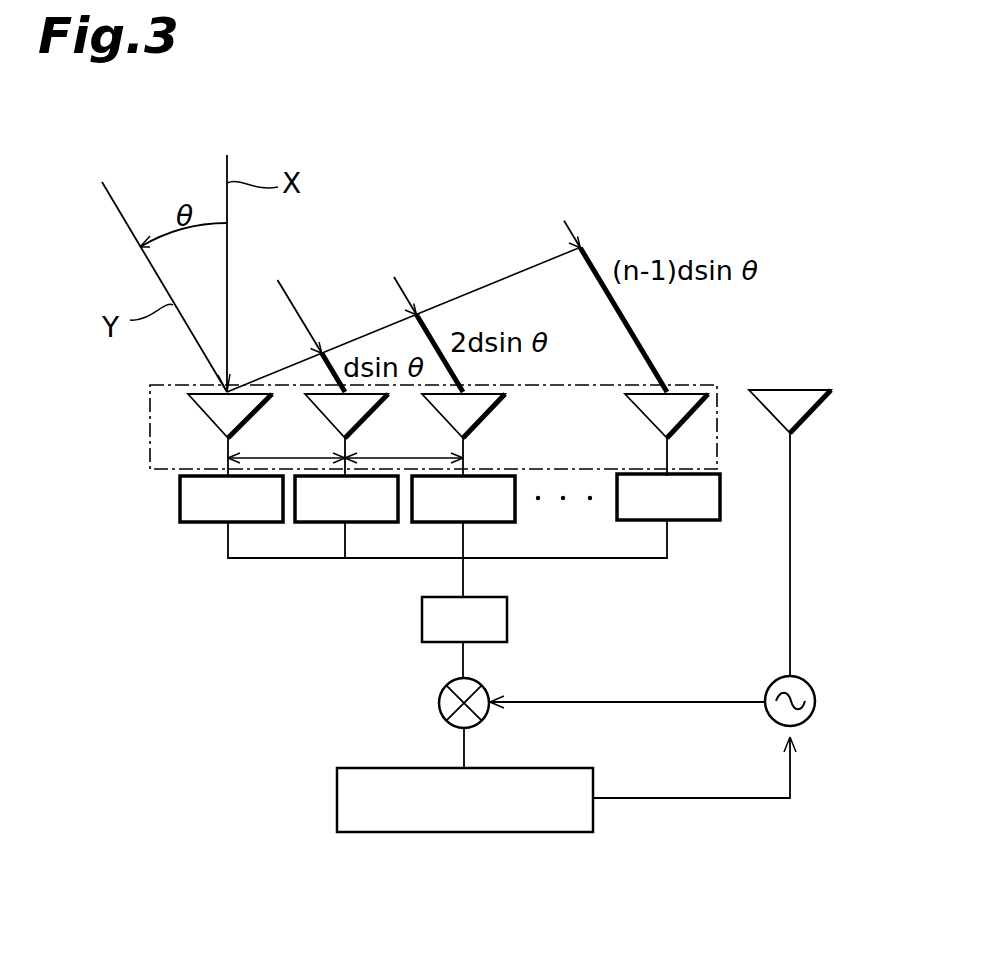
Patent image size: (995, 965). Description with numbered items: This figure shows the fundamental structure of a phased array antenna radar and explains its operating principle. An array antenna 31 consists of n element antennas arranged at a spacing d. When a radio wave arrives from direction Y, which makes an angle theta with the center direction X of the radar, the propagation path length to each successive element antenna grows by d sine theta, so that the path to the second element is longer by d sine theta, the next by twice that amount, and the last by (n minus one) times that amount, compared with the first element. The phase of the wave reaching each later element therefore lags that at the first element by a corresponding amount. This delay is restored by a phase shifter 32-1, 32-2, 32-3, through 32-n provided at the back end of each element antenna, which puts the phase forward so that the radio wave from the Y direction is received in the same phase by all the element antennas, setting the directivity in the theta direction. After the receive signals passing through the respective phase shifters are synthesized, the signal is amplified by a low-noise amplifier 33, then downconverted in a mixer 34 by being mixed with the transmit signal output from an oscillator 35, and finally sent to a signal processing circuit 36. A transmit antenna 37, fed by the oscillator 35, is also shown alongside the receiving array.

The array antenna 31 is at (683, 383).
The phase shifter 32-1 is at (243, 523).
The phase shifter 32-2 is at (360, 523).
The phase shifter 32-3 is at (488, 522).
The phase shifter 32-n is at (690, 520).
The low-noise amplifier 33 is at (507, 613).
The mixer 34 is at (487, 687).
The oscillator 35 is at (810, 679).
The signal processing circuit 36 is at (573, 765).
The transmit antenna 37 is at (815, 407).